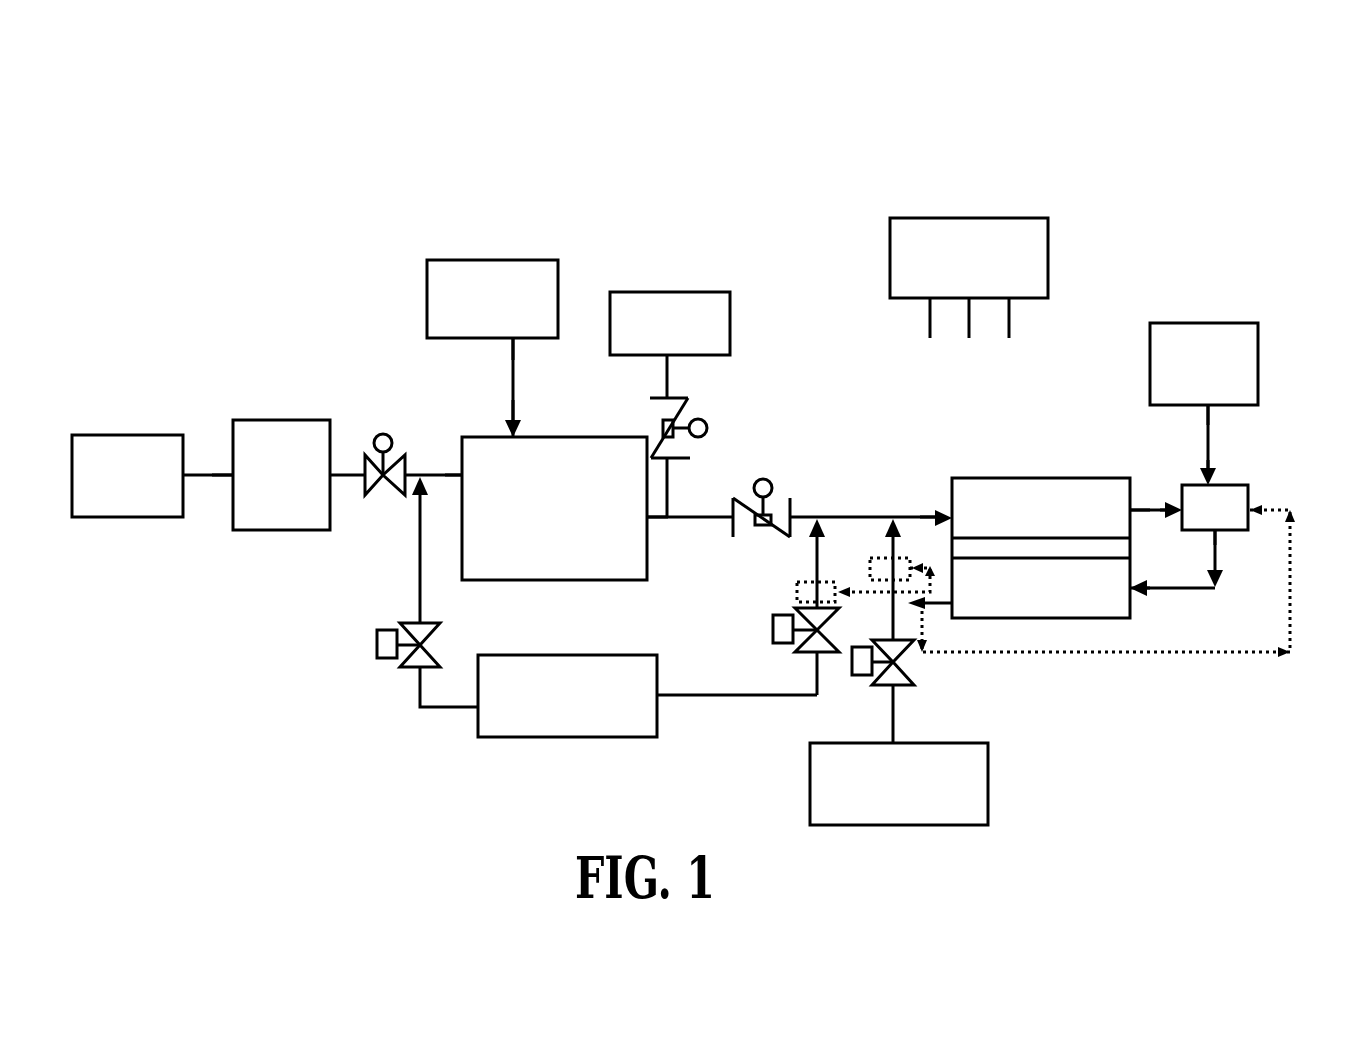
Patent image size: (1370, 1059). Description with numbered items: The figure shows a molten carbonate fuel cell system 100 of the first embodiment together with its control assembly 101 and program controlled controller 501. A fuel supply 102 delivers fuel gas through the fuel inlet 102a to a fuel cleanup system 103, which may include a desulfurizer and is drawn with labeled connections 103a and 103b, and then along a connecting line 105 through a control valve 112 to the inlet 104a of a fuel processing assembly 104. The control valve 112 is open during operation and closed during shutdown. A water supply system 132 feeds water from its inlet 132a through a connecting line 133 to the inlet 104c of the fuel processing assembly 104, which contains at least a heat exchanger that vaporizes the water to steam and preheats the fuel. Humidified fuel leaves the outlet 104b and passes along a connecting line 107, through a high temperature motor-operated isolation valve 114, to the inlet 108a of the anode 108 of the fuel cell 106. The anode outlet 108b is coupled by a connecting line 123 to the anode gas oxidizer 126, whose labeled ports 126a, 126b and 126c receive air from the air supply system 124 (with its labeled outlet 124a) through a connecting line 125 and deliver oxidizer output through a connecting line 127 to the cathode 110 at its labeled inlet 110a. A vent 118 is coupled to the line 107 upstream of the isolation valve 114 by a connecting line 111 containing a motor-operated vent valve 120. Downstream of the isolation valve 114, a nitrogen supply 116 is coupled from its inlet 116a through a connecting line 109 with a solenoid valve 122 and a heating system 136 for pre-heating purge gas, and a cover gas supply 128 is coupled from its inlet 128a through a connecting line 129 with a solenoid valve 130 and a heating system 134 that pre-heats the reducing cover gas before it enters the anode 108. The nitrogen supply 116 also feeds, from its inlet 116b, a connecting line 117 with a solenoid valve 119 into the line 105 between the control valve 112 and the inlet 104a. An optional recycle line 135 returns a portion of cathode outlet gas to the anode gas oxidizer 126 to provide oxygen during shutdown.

The MCFC system 100 is at (858, 204).
The control assembly 101 is at (759, 408).
The fuel supply 102 is at (168, 440).
The fuel inlet 102a is at (192, 465).
The fuel cleanup system 103 is at (323, 420).
The fuel clean up inlet 103a is at (230, 485).
The fuel clean up outlet 103b is at (332, 480).
The fuel processing assembly 104 is at (505, 475).
The inlet of the fuel processing assembly 104a is at (462, 480).
The outlet of the fuel processing assembly 104b is at (650, 527).
The inlet of the fuel processing assembly 104c is at (518, 435).
The connecting line 105 is at (413, 462).
The fuel cell 106 is at (950, 549).
The connecting line 107 is at (703, 510).
The anode 108 is at (1052, 490).
The anode inlet 108a is at (947, 517).
The anode outlet 108b is at (1138, 502).
The connecting line 109 is at (780, 698).
The cathode 110 is at (1075, 612).
The cathode inlet 110a is at (1138, 595).
The connecting line 111 is at (672, 390).
The control valve 112 is at (393, 493).
The isolation valve 114 is at (763, 540).
The nitrogen supply 116 is at (540, 655).
The nitrogen supply inlet 116a is at (660, 695).
The nitrogen supply inlet 116b is at (477, 715).
The connecting line 117 is at (420, 583).
The vent 118 is at (712, 300).
The solenoid valve 119 is at (380, 660).
The vent valve 120 is at (660, 420).
The solenoid valve 122 is at (773, 620).
The connecting line 123 is at (1140, 512).
The air supply system 124 is at (1200, 323).
The air supply outlet 124a is at (1200, 408).
The connecting line 125 is at (1208, 450).
The anode gas oxidizer 126 is at (1197, 522).
The oxidizer air inlet 126a is at (1208, 485).
The oxidizer anode exhaust inlet 126b is at (1177, 493).
The oxidizer outlet 126c is at (1217, 532).
The connecting line 127 is at (1195, 590).
The cover gas supply 128 is at (990, 780).
The cover gas supply inlet 128a is at (893, 738).
The connecting line 129 is at (892, 598).
The solenoid valve 130 is at (900, 662).
The water supply system 132 is at (427, 290).
The water supply inlet 132a is at (505, 338).
The connecting line 133 is at (510, 410).
The heating system 134 is at (890, 557).
The recycle line 135 is at (1292, 612).
The heating system 136 is at (837, 588).
The controller 501 is at (973, 220).